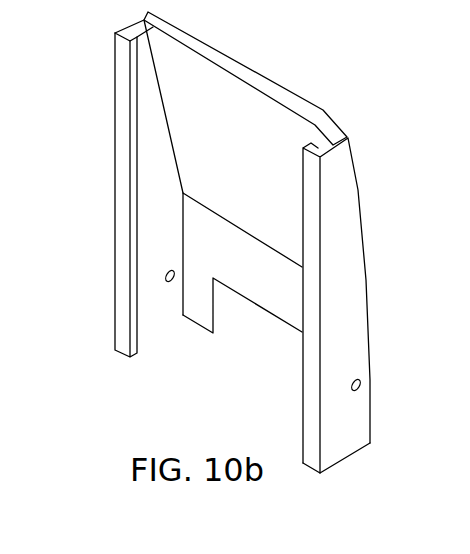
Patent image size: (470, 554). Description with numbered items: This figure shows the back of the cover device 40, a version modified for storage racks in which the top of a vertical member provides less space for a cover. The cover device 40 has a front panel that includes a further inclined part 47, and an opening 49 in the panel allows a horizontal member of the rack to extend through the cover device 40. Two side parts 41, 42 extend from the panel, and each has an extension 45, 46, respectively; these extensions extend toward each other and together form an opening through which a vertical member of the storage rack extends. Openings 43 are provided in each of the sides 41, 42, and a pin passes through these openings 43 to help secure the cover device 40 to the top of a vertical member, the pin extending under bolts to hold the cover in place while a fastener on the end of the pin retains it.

The cover device 40 is at (195, 421).
The side part 41 is at (158, 310).
The side part 42 is at (337, 447).
The opening 43 is at (163, 277).
The extension 45 is at (122, 57).
The extension 46 is at (310, 443).
The further inclined part 47 is at (242, 52).
The opening 49 is at (263, 333).